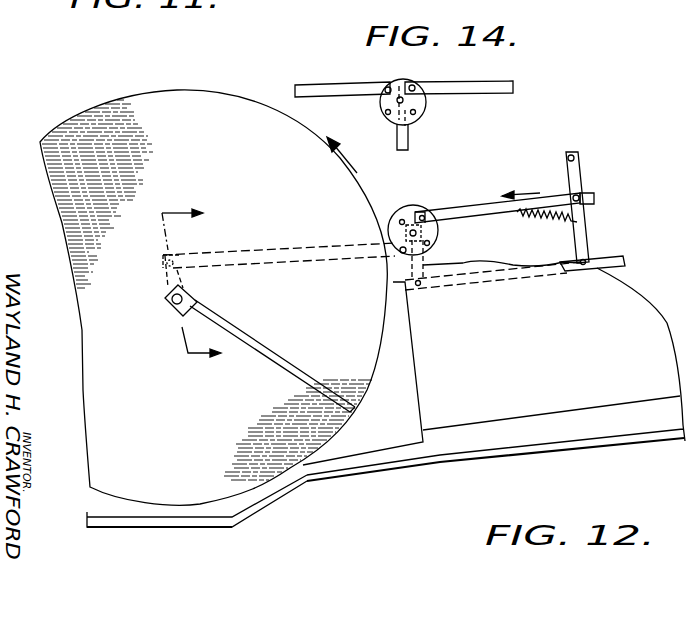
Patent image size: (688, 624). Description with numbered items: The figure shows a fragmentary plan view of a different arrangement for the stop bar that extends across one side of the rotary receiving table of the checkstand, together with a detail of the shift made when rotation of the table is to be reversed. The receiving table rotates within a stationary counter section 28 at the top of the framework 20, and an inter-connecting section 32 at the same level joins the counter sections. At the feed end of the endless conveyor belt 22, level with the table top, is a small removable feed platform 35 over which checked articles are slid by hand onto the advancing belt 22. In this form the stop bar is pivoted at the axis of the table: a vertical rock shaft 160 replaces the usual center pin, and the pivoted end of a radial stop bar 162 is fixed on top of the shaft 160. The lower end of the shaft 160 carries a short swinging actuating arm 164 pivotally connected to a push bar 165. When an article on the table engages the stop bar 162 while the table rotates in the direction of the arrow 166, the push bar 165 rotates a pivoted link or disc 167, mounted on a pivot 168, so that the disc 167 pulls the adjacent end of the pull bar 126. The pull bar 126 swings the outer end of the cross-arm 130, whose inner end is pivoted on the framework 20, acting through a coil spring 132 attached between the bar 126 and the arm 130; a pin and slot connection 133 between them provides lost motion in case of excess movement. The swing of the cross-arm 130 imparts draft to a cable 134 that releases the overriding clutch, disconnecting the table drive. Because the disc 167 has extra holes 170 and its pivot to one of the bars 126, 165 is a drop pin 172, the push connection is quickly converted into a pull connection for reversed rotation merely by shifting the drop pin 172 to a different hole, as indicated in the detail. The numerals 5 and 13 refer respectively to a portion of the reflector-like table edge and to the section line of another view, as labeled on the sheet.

In FIG. 12, the parabolic reflector dish 5 is at (44, 187).
In FIG. 12, the section line 13- 13 is at (205, 286).
In FIG. 12, the framework 20 is at (406, 472).
In FIG. 12, the endless conveyor belt 22 is at (553, 343).
In FIG. 12, the stationary counter section 28 is at (205, 508).
In FIG. 12, the inter-connecting section 32 is at (483, 268).
In FIG. 12, the feed platform 35 is at (405, 393).
In FIG. 14, the pull bar 126 is at (475, 84).
In FIG. 12, the pull bar 126 is at (462, 208).
In FIG. 12, the cross-arm 130 is at (563, 172).
In FIG. 12, the coil spring 132 is at (532, 212).
In FIG. 12, the pin and slot connection 133 is at (583, 193).
In FIG. 12, the cable 134 is at (570, 156).
In FIG. 12, the vertical rock shaft 160 is at (173, 305).
In FIG. 12, the radial stop bar 162 is at (320, 377).
In FIG. 12, the swinging actuating arm 164 is at (168, 280).
In FIG. 14, the push bar 165 is at (319, 88).
In FIG. 12, the push bar 165 is at (303, 248).
In FIG. 12, the arrow 166 is at (292, 216).
In FIG. 14, the pivoted link or disc 167 is at (416, 113).
In FIG. 12, the pivoted link or disc 167 is at (423, 230).
In FIG. 14, the pivot 168 is at (403, 100).
In FIG. 12, the pivot 168 is at (408, 233).
In FIG. 14, the extra holes 170 is at (384, 112).
In FIG. 12, the extra holes 170 is at (402, 220).
In FIG. 14, the drop pin 172 is at (388, 86).
In FIG. 12, the drop pin 172 is at (403, 254).